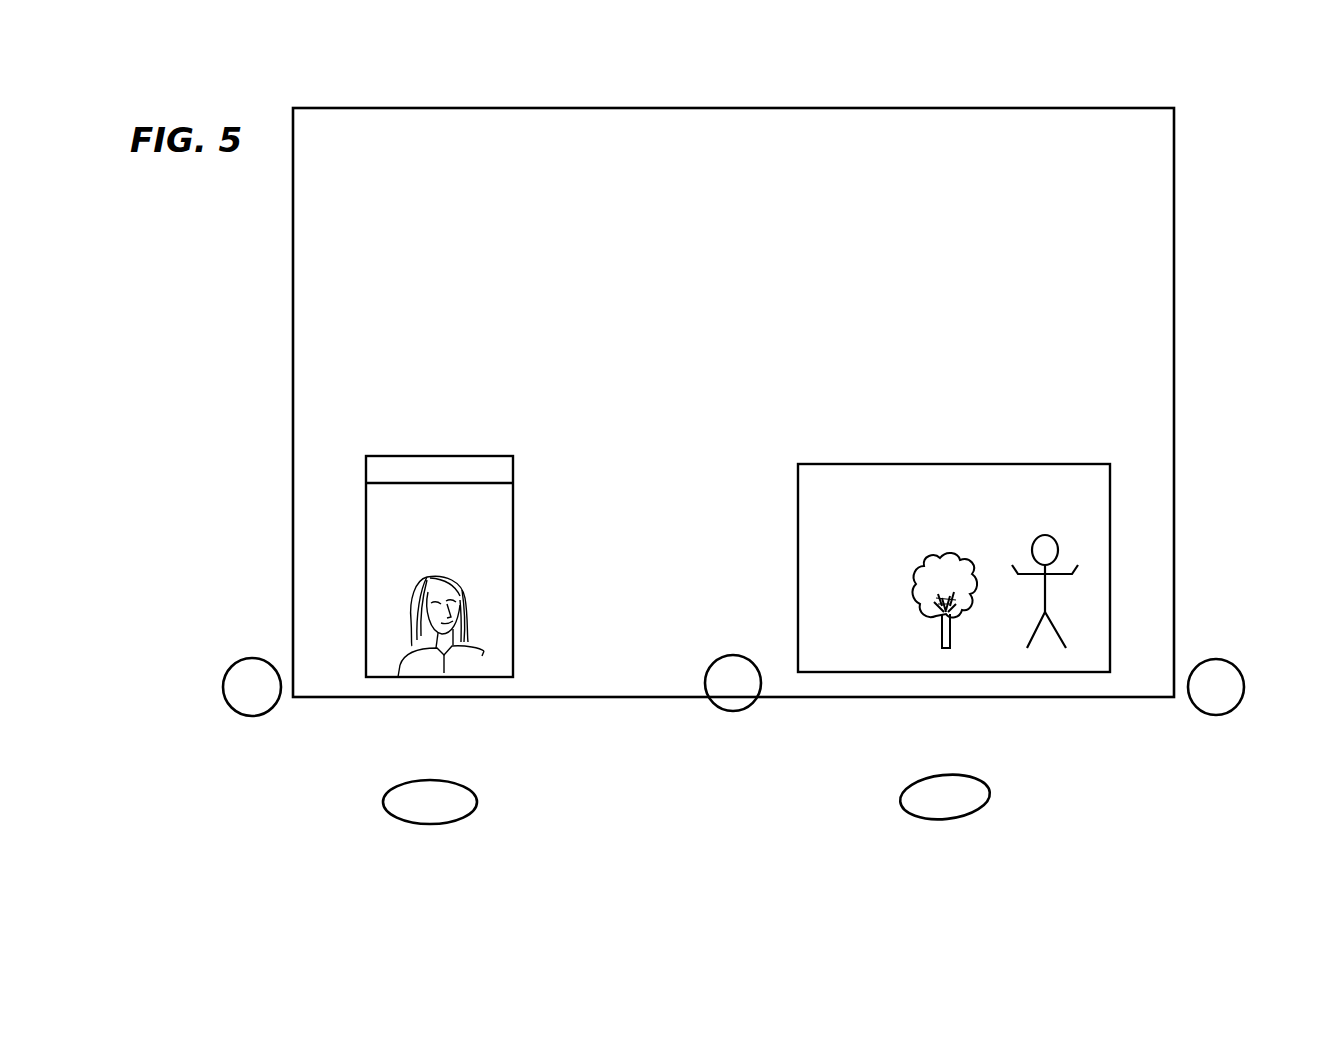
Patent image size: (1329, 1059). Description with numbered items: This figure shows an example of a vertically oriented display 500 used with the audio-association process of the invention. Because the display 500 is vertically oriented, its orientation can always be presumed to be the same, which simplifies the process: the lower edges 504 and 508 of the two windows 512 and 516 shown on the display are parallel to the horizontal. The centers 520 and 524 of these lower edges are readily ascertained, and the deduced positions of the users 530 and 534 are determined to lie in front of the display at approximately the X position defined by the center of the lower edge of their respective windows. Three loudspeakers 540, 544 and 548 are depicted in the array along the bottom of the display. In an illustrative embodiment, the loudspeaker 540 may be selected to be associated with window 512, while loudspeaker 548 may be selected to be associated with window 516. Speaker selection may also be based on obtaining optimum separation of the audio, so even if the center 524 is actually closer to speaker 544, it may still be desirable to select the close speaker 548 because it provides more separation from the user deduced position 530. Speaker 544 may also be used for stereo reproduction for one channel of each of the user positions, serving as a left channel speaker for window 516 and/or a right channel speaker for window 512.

The vertically oriented display 500 is at (507, 143).
The lower edge 504 is at (386, 677).
The lower edge 508 is at (1070, 673).
The window 512 is at (513, 566).
The window 516 is at (953, 462).
The center of lower edge 520 is at (439, 670).
The center of lower edge 524 is at (952, 662).
The deduced user position 530 is at (448, 780).
The deduced user position 534 is at (900, 797).
The loudspeaker 540 is at (252, 657).
The loudspeaker 544 is at (733, 712).
The loudspeaker 548 is at (1216, 658).